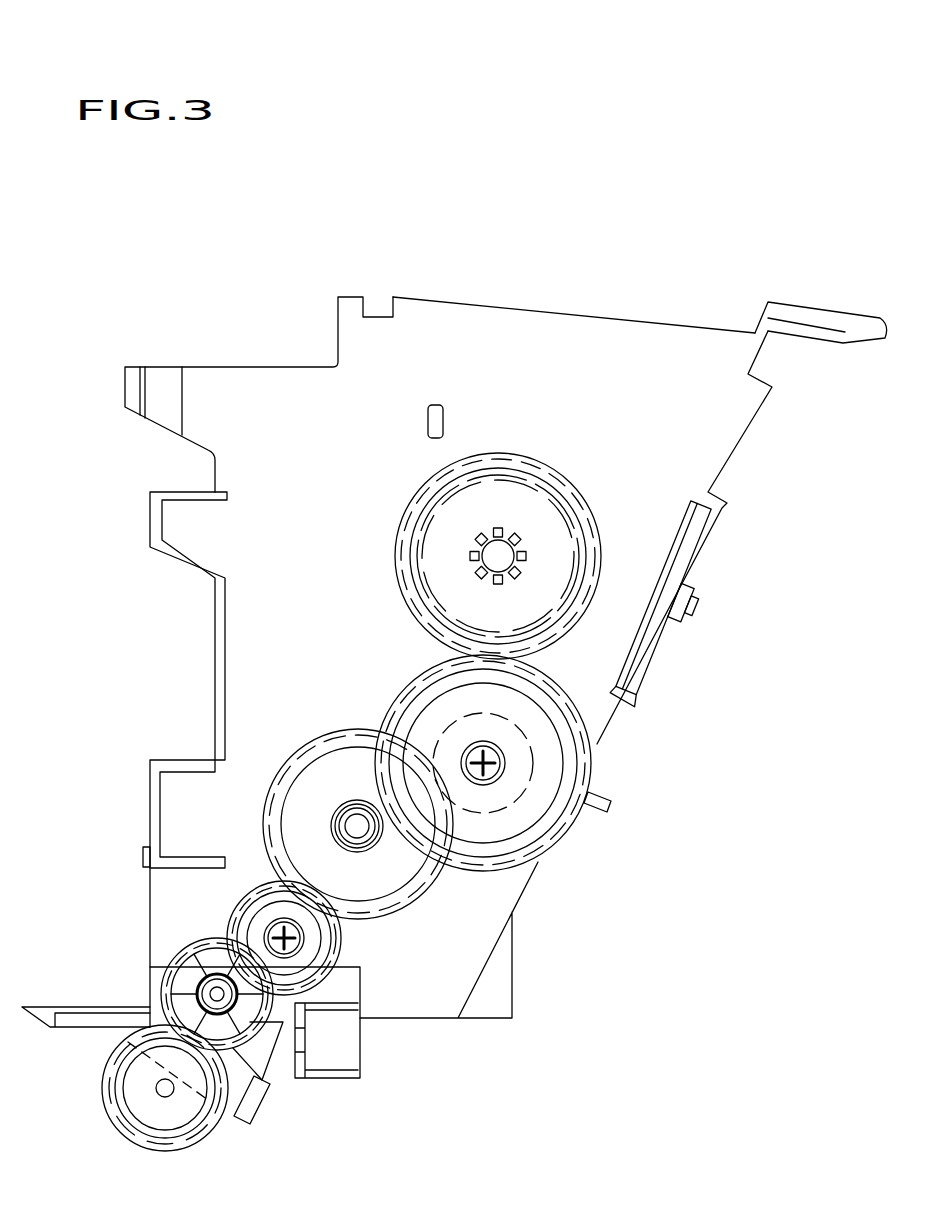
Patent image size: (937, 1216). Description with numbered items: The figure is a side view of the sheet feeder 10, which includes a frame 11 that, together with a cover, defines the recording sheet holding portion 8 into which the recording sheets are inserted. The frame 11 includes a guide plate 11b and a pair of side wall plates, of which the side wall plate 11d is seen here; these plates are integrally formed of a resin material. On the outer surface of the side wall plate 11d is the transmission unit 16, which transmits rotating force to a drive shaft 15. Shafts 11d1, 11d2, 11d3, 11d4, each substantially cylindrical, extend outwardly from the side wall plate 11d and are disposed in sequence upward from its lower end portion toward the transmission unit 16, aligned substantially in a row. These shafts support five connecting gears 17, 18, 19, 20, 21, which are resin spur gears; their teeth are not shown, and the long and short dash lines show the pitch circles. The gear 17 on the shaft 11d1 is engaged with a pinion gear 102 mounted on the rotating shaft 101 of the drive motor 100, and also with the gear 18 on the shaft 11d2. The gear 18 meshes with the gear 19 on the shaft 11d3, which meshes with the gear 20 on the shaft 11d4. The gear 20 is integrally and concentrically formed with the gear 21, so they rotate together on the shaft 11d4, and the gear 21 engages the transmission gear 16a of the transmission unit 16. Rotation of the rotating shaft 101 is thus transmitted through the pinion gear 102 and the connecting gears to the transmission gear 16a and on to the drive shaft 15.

The sheet feeder 10 is at (638, 106).
The recording sheet holding portion 8 is at (564, 280).
The frame 11 is at (805, 376).
The side wall plate 11d is at (640, 340).
The guide plate 11b is at (94, 1015).
The shaft 11d1 is at (262, 1085).
The shaft 11d2 is at (303, 937).
The shaft 11d3 is at (357, 822).
The shaft 11d4 is at (492, 773).
The drive shaft 15 is at (497, 544).
The transmission unit 16 is at (368, 497).
The transmission gear 16a is at (417, 605).
The connecting gear 17 is at (190, 958).
The connecting gear 18 is at (252, 884).
The connecting gear 19 is at (432, 905).
The connecting gear 20 is at (523, 735).
The connecting gear 21 is at (598, 760).
The drive motor 100 is at (106, 1091).
The rotating shaft 101 is at (160, 1094).
The pinion gear 102 is at (205, 1112).